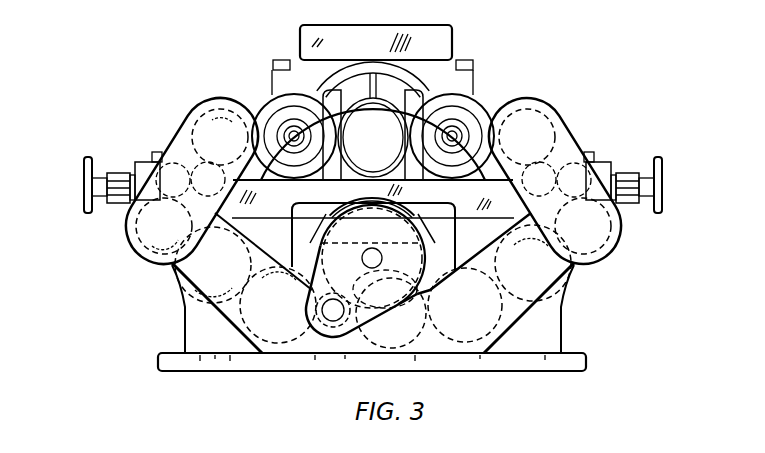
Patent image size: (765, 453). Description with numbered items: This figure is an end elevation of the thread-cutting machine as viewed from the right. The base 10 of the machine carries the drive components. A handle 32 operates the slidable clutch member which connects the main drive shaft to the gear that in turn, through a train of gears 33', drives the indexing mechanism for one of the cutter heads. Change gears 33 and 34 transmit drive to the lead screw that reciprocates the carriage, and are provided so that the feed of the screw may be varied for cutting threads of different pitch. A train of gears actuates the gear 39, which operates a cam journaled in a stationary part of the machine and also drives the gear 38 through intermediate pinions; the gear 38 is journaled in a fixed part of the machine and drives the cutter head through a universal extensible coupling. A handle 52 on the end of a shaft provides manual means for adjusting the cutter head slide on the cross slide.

The base 10 is at (550, 327).
The handle 32 is at (188, 275).
The change gear 33 is at (313, 314).
The train of gears 33' is at (554, 263).
The change gear 34 is at (312, 286).
The gear 38 is at (200, 130).
The gear 39 is at (143, 230).
The handle 52 is at (85, 207).